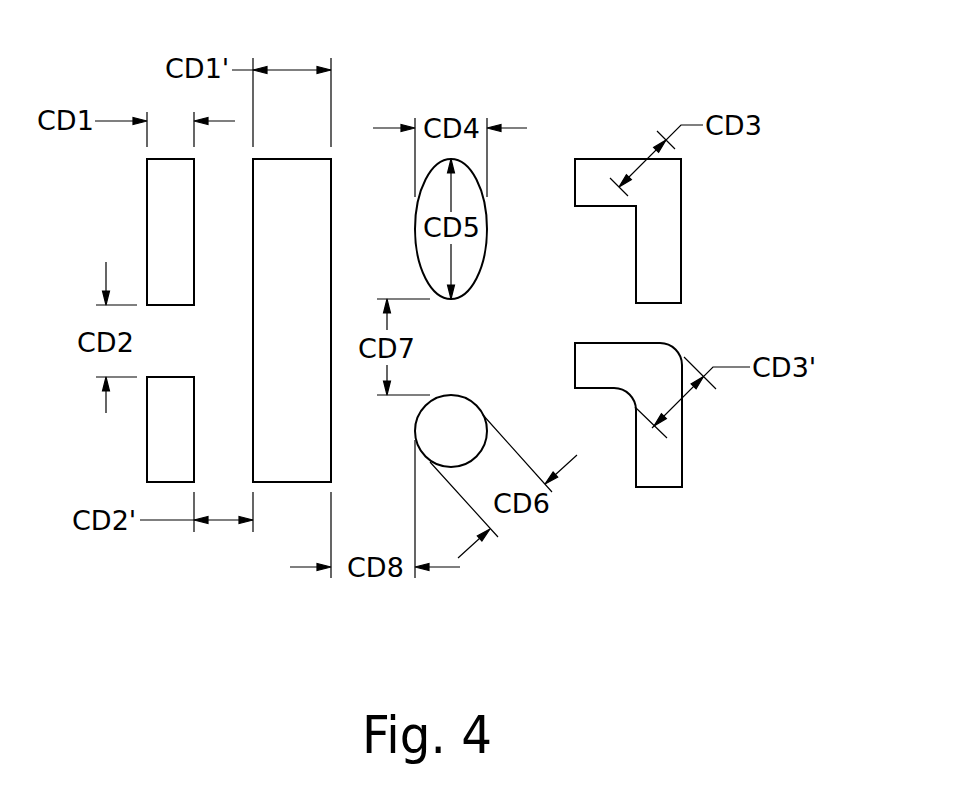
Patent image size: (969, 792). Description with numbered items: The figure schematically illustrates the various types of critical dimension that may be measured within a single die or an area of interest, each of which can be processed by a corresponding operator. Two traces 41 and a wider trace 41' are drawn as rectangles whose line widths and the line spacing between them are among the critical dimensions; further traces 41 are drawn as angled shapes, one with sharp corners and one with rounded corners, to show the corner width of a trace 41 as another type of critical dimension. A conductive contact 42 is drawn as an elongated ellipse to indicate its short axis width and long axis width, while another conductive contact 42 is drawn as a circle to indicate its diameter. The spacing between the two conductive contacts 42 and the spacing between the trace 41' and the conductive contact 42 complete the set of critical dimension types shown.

The trace 41 is at (412, 323).
The trace 41' is at (264, 320).
The conductive contact 42 is at (470, 266).